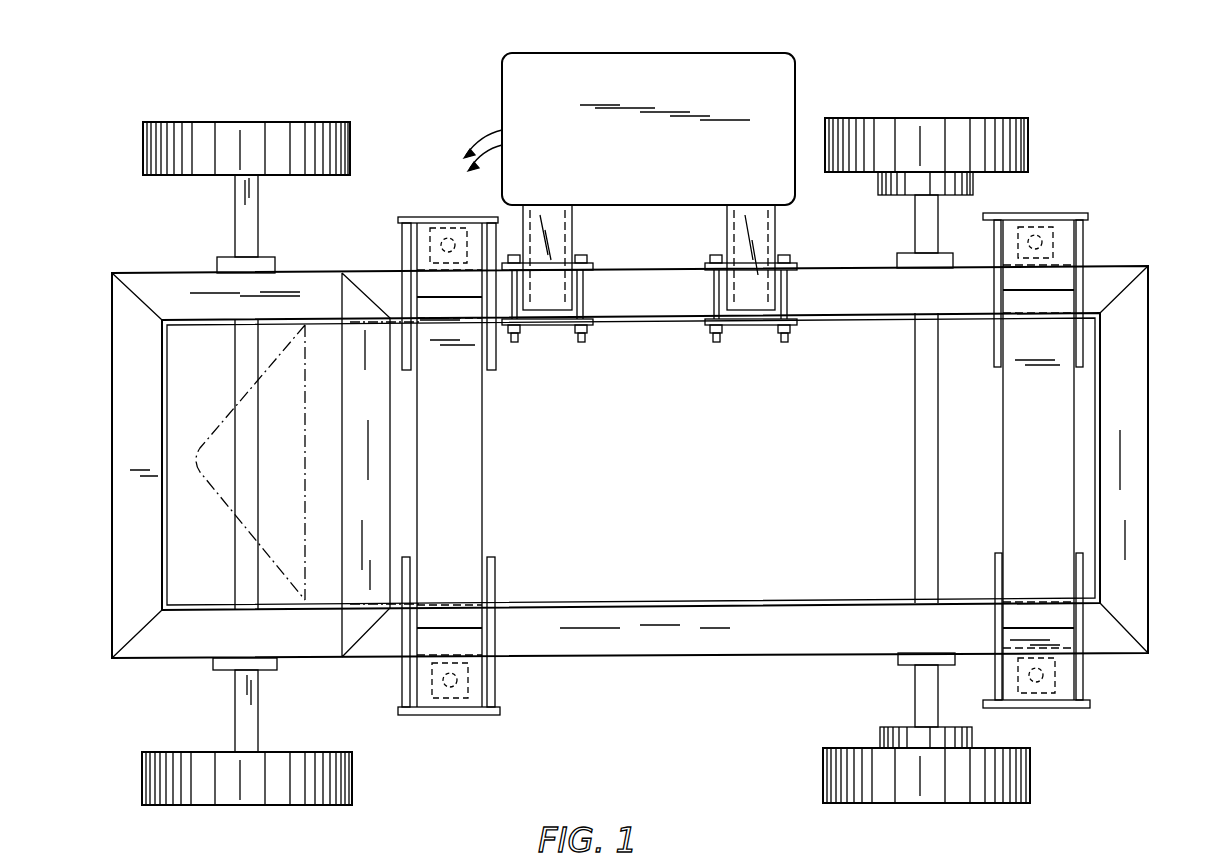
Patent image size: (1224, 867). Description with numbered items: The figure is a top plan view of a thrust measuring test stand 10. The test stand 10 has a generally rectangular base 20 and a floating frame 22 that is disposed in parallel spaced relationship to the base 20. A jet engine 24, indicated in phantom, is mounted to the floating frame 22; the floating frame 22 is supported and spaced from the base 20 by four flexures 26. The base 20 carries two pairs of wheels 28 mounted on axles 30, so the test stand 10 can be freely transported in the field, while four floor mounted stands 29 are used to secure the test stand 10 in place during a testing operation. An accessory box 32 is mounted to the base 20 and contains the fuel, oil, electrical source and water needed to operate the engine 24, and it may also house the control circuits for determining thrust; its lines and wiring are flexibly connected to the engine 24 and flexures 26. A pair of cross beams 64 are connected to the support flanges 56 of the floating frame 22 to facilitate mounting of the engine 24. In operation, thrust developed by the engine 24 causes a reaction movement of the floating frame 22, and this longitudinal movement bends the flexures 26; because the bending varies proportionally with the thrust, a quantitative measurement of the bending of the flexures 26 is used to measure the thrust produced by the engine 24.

The thrust measuring test stand 10 is at (1082, 163).
The base 20 is at (137, 271).
The floating frame 22 is at (338, 340).
The jet engine 24 is at (215, 542).
The flexures 26 is at (430, 240).
The wheels 28 is at (215, 134).
The floor mounted stands 29 is at (402, 230).
The axles 30 is at (237, 205).
The accessory box 32 is at (631, 70).
The support flanges 56 is at (402, 217).
The cross beams 64 is at (470, 520).